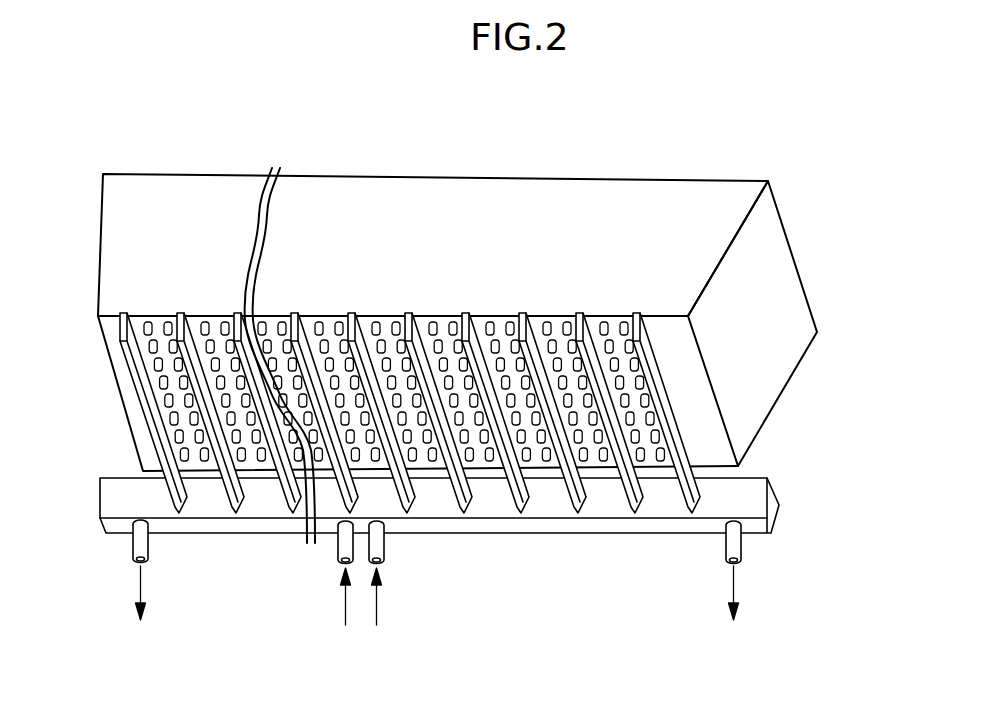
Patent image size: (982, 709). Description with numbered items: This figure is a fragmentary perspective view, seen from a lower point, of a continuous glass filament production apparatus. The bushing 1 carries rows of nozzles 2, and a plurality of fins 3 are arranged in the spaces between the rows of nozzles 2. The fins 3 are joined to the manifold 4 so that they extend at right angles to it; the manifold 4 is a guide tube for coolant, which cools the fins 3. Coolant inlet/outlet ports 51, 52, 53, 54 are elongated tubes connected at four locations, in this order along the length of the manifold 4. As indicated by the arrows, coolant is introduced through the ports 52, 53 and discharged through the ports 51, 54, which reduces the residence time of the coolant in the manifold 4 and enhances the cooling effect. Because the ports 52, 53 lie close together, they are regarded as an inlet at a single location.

The bushing 1 is at (773, 317).
The nozzles 2 is at (655, 460).
The fins 3 is at (602, 483).
The manifold 4 is at (735, 492).
The coolant inlet/outlet port 51 is at (136, 542).
The coolant inlet/outlet port 52 is at (342, 545).
The coolant inlet/outlet port 53 is at (387, 543).
The coolant inlet/outlet port 54 is at (736, 540).